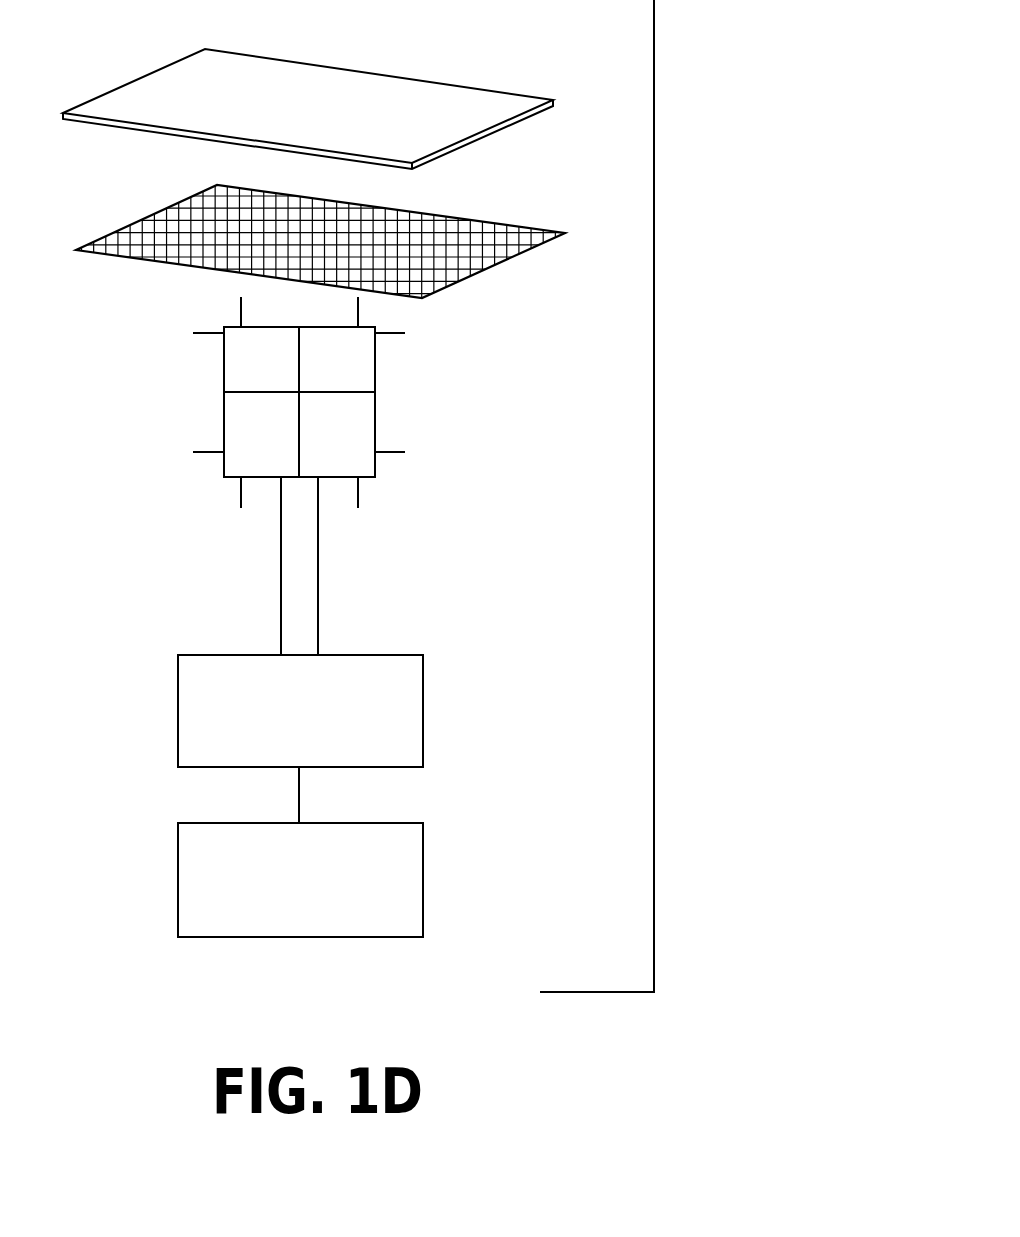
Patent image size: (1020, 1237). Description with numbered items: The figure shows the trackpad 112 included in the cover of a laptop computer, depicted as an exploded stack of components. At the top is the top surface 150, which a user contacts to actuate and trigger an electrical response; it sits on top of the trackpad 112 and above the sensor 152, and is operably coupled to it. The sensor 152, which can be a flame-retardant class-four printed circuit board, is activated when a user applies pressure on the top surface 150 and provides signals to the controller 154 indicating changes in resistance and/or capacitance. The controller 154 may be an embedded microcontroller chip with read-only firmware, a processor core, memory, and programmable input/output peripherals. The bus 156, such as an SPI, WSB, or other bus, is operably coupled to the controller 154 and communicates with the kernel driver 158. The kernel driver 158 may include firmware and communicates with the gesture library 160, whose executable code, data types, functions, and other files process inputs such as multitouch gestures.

The trackpad 112 is at (654, 449).
The top surface 150 is at (462, 83).
The sensor 152 is at (457, 218).
The controller 154 is at (370, 376).
The bus 156 is at (320, 573).
The kernel driver 158 is at (423, 712).
The gesture library 160 is at (423, 880).